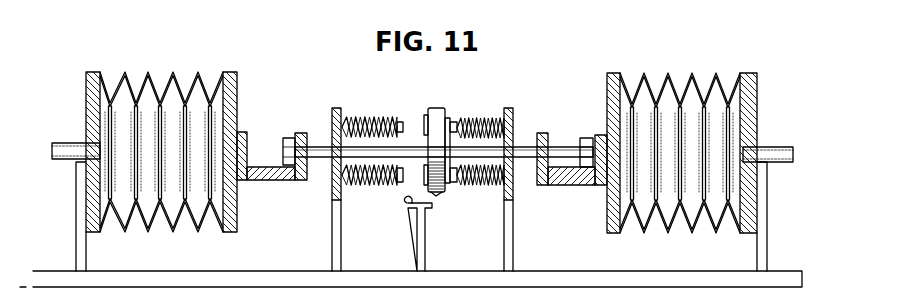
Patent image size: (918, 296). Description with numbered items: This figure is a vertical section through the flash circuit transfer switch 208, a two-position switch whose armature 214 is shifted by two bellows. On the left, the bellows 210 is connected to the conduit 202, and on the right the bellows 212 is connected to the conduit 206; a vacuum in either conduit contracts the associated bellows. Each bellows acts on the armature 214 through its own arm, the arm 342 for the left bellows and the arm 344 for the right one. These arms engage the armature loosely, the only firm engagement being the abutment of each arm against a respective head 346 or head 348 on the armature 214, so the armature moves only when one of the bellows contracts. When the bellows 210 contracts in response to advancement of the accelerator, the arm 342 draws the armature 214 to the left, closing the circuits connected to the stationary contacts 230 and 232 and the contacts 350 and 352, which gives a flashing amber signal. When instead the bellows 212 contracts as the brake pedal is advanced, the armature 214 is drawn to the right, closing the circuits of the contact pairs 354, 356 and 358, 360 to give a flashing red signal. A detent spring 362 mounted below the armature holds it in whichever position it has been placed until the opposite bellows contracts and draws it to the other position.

The conduit 202 is at (75, 143).
The conduit 206 is at (767, 147).
The flash circuit transfer switch 208 is at (395, 256).
The bellows 210 is at (147, 72).
The bellows 212 is at (645, 75).
The armature 214 is at (315, 147).
The stationary contact 230 is at (405, 125).
The stationary contact 232 is at (425, 178).
The arm 342 is at (282, 180).
The arm 344 is at (580, 185).
The head 346 is at (290, 138).
The head 348 is at (590, 138).
The contact 350 is at (427, 125).
The contact 352 is at (405, 198).
The contact 354 is at (450, 118).
The contact 356 is at (458, 125).
The contact 358 is at (443, 193).
The contact 360 is at (452, 185).
The detent spring 362 is at (410, 210).